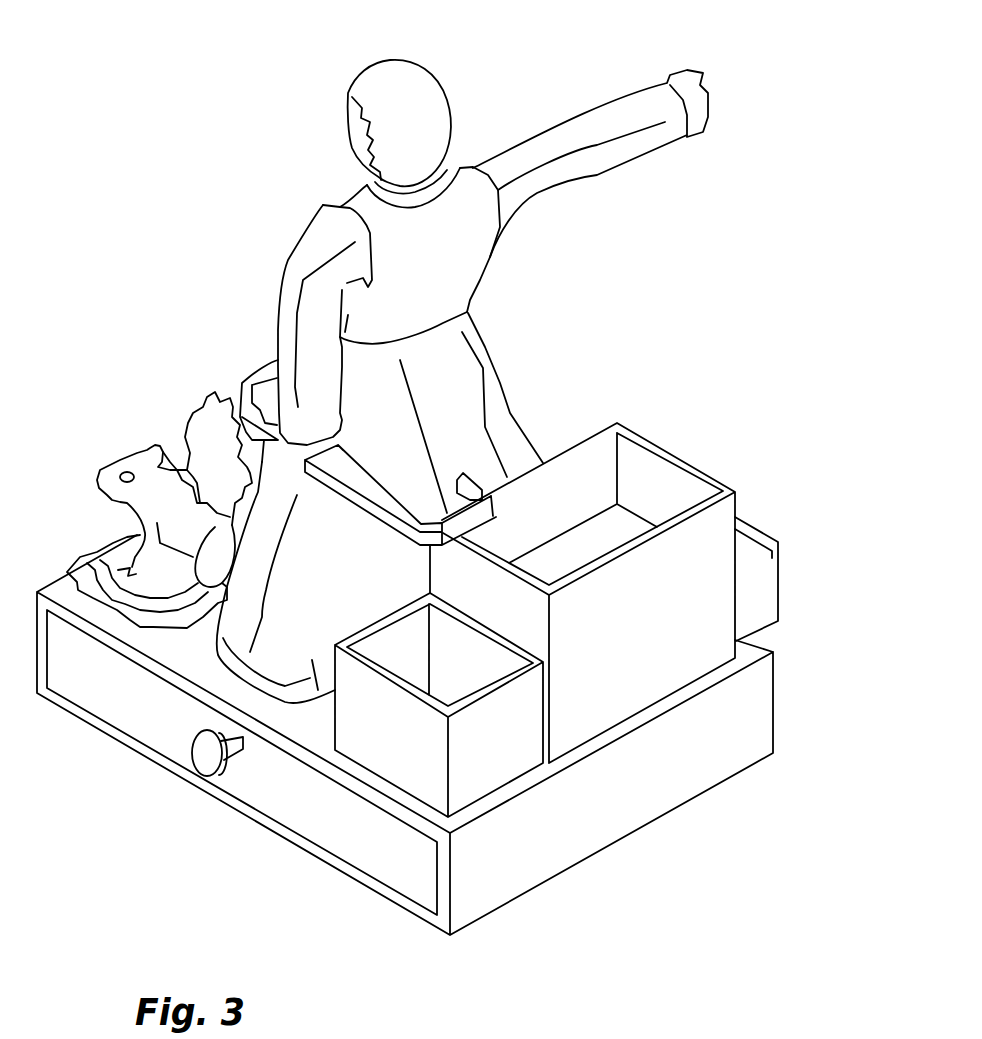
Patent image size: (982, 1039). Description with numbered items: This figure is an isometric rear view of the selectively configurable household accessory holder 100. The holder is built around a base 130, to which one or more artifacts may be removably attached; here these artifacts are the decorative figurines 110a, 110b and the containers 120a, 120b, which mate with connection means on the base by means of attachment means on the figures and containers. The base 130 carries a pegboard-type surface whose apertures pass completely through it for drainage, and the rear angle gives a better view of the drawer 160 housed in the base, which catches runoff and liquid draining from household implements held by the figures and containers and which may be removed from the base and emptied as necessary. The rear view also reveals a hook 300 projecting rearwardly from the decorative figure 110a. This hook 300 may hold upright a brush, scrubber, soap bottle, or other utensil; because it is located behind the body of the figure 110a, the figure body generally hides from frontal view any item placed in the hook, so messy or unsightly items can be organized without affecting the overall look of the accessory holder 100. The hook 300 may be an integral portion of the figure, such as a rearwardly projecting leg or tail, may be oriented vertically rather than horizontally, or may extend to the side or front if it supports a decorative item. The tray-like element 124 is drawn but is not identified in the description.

The accessory holder 100 is at (222, 208).
The decorative figurine 110a is at (570, 145).
The decorative figurine 110b is at (143, 467).
The container 120a is at (492, 747).
The container 120b is at (583, 437).
The tray 124 is at (767, 537).
The base 130 is at (682, 787).
The drawer 160 is at (113, 698).
The hook 300 is at (353, 500).